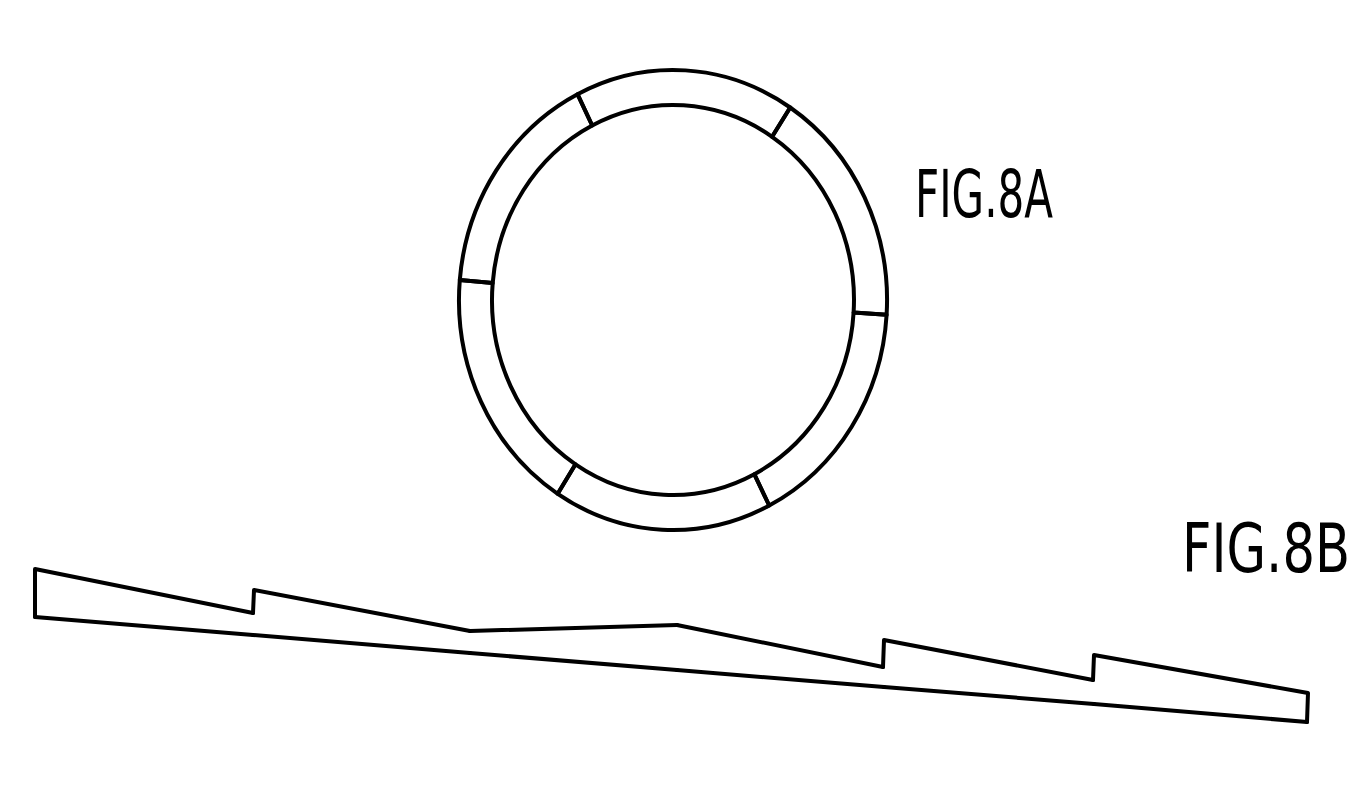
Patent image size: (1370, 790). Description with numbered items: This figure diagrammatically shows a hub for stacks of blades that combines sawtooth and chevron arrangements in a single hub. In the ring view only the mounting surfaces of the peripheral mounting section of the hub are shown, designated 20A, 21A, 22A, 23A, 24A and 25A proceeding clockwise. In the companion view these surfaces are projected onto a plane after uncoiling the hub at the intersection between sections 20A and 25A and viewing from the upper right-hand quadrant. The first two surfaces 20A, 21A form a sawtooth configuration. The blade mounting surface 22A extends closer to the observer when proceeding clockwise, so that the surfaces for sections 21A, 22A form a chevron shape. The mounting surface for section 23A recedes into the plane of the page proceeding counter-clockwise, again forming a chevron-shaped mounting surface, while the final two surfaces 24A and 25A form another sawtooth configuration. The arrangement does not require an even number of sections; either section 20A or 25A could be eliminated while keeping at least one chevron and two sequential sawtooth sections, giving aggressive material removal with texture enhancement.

In FIG. 8A, the hub mounting surface 20A is at (733, 78).
In FIG. 8B, the hub mounting surface 20A is at (95, 573).
In FIG. 8A, the hub mounting surface 21A is at (820, 138).
In FIG. 8B, the hub mounting surface 21A is at (302, 597).
In FIG. 8A, the blade mounting surface 22A is at (877, 380).
In FIG. 8B, the blade mounting surface 22A is at (563, 628).
In FIG. 8A, the mounting surface 23A is at (678, 532).
In FIG. 8B, the mounting surface 23A is at (755, 637).
In FIG. 8A, the mounting surface 24A is at (512, 377).
In FIG. 8B, the mounting surface 24A is at (942, 642).
In FIG. 8A, the mounting surface 25A is at (525, 182).
In FIG. 8B, the mounting surface 25A is at (1167, 663).